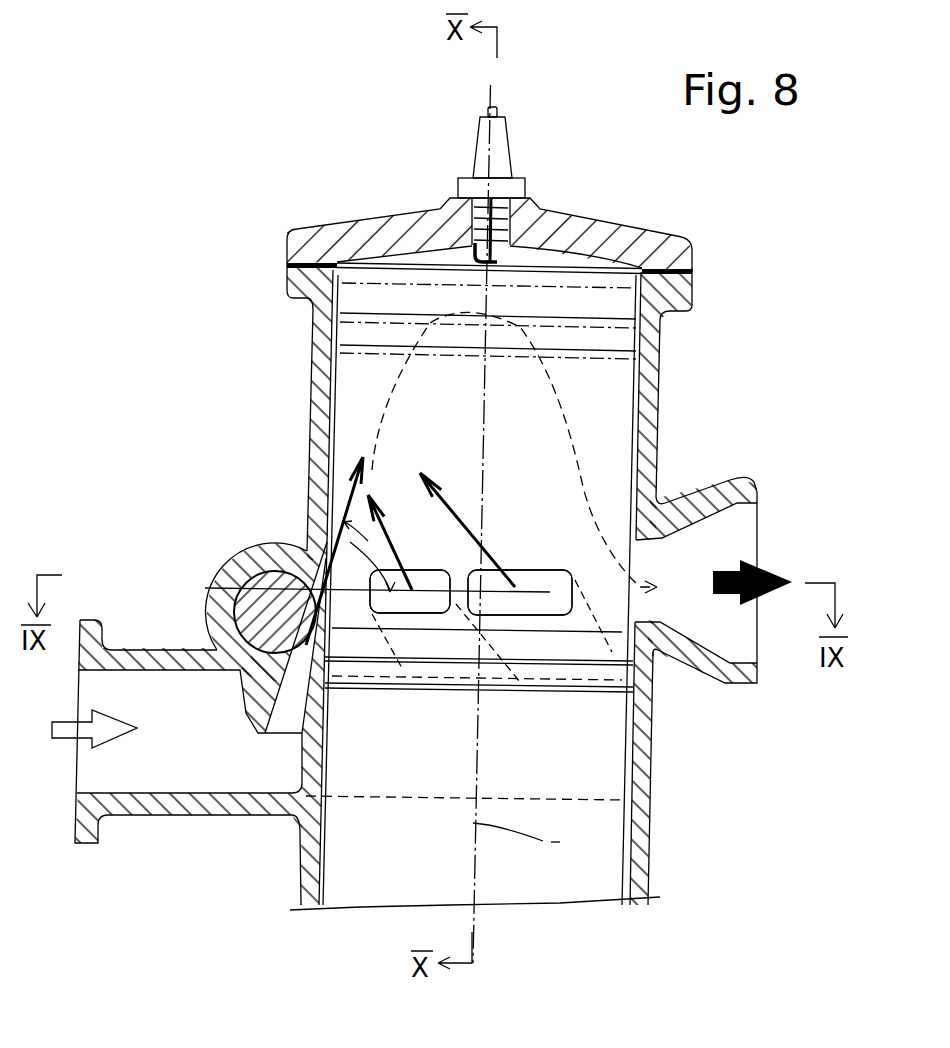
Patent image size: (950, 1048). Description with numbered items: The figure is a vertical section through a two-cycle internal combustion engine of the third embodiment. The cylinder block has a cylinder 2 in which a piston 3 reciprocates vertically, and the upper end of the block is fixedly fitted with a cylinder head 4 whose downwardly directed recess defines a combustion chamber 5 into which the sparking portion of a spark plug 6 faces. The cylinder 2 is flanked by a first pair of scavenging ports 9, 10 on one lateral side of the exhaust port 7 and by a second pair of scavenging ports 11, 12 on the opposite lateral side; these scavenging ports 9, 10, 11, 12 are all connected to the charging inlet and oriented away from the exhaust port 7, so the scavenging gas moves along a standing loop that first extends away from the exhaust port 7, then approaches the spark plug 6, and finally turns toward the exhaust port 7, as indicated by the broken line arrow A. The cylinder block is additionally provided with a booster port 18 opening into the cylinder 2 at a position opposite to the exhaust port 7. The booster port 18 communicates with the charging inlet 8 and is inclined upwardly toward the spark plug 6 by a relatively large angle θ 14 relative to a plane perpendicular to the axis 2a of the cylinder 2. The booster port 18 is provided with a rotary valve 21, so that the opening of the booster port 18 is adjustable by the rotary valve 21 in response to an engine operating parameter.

The cylinder 2 is at (332, 437).
The axis of the cylinder 2a is at (567, 843).
The piston 3 is at (543, 878).
The cylinder head 4 is at (630, 242).
The combustion chamber 5 is at (543, 262).
The spark plug 6 is at (483, 222).
The exhaust port 7 is at (697, 613).
The charging inlet 8 is at (173, 760).
The scavenging port 9 is at (520, 592).
The scavenging port 10 is at (410, 591).
The scavenging port 11 is at (548, 588).
The scavenging port 12 is at (432, 606).
The angle θ 14 is at (313, 563).
The booster port 18 is at (268, 536).
The rotary valve 21 is at (263, 590).
The broken line arrow A is at (555, 392).